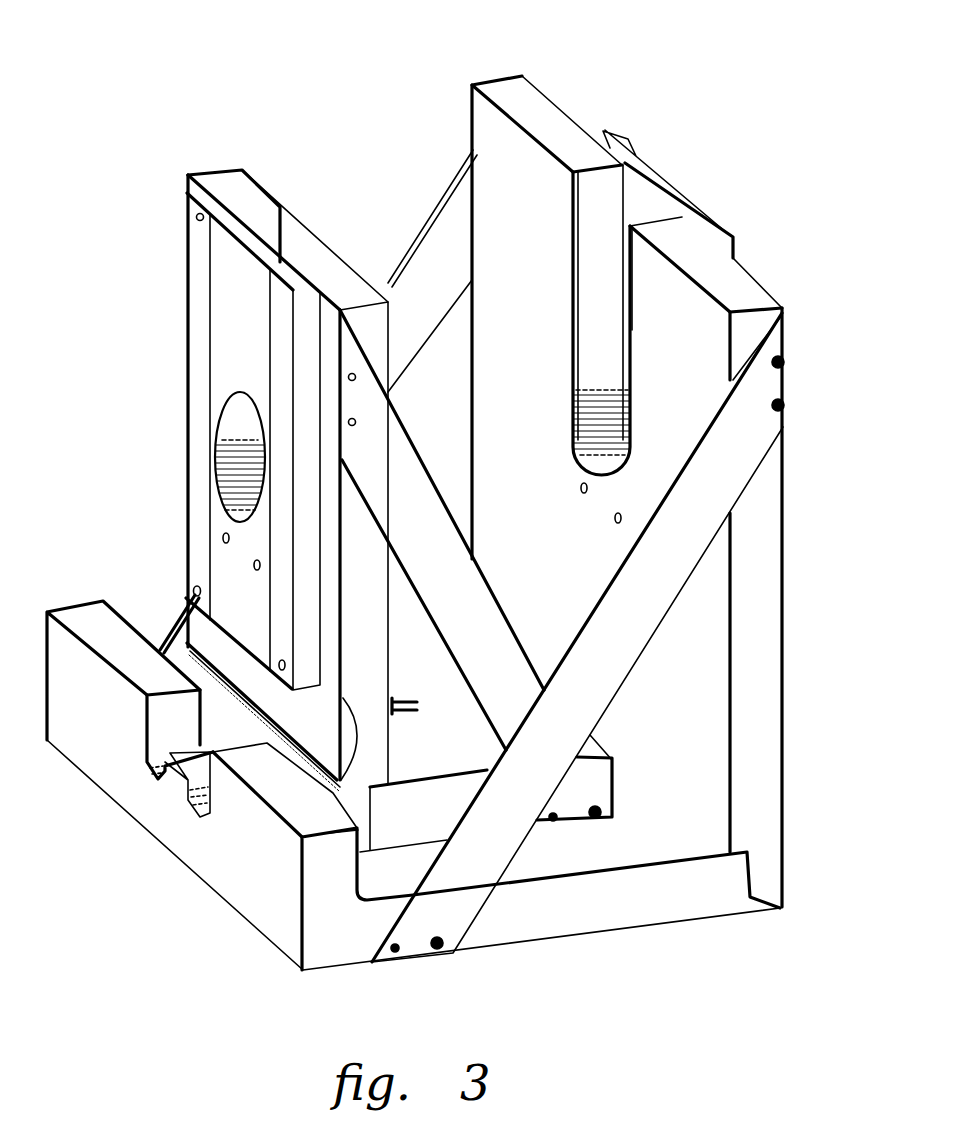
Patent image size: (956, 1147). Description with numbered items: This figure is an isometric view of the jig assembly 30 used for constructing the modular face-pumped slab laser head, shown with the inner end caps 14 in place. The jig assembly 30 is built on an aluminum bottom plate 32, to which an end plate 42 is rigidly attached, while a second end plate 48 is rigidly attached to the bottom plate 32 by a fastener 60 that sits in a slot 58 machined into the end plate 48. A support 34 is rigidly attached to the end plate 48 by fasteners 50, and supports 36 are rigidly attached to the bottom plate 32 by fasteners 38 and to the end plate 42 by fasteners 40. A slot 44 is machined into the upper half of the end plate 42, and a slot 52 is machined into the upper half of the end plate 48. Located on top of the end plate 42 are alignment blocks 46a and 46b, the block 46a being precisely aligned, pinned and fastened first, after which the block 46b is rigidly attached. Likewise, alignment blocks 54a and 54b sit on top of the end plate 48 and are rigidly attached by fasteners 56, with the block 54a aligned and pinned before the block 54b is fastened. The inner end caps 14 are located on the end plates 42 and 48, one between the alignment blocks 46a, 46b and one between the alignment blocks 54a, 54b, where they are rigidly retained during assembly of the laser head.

The inner end cap 14 is at (735, 132).
The jig assembly 30 is at (675, 125).
The bottom plate 32 is at (233, 875).
The support 34 is at (476, 542).
The support 36 is at (577, 556).
The fastener 38 is at (395, 953).
The fastener 40 is at (780, 362).
The end plate 42 is at (763, 643).
The slot 44 is at (598, 333).
The alignment block 46a is at (617, 150).
The alignment block 46b is at (705, 220).
The end plate 48 is at (232, 187).
The fastener 50 is at (352, 422).
The slot 52 is at (292, 250).
The alignment block 54a is at (190, 330).
The alignment block 54b is at (278, 375).
The fastener 56 is at (198, 218).
The slot 58 is at (400, 706).
The fastener 60 is at (400, 716).